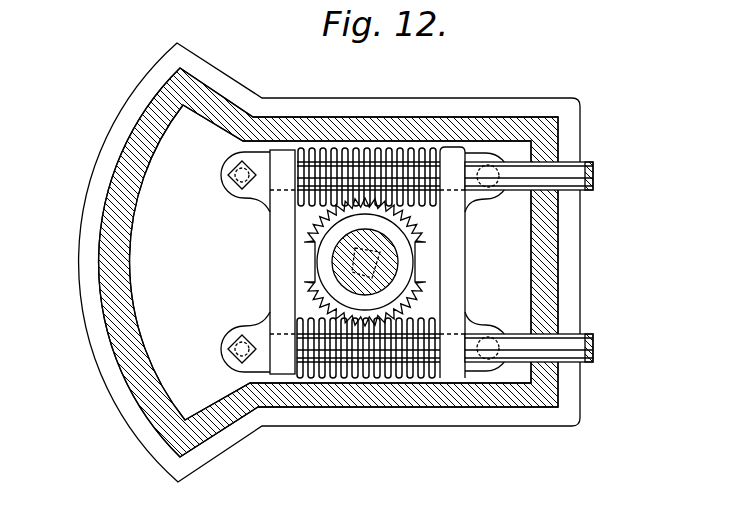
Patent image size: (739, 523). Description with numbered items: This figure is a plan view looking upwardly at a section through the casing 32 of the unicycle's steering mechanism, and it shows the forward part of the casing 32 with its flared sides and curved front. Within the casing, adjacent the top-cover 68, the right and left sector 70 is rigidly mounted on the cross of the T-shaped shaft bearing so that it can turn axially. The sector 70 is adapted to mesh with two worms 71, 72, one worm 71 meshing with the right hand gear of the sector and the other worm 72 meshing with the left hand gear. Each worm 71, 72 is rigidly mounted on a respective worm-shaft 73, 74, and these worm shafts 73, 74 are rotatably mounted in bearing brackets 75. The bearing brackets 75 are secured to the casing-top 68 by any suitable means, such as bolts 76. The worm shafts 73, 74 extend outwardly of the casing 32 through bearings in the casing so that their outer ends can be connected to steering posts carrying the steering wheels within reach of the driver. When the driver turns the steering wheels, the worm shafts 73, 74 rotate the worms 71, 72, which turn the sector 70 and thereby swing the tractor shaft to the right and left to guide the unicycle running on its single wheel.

The casing 32 is at (120, 326).
The top-cover 68 is at (182, 372).
The right and left sector 70 is at (320, 238).
The worm 71 is at (400, 147).
The worm 72 is at (369, 372).
The worm-shaft 73 is at (567, 174).
The worm-shaft 74 is at (568, 344).
The bearing brackets 75 is at (453, 265).
The bolts 76 is at (233, 182).